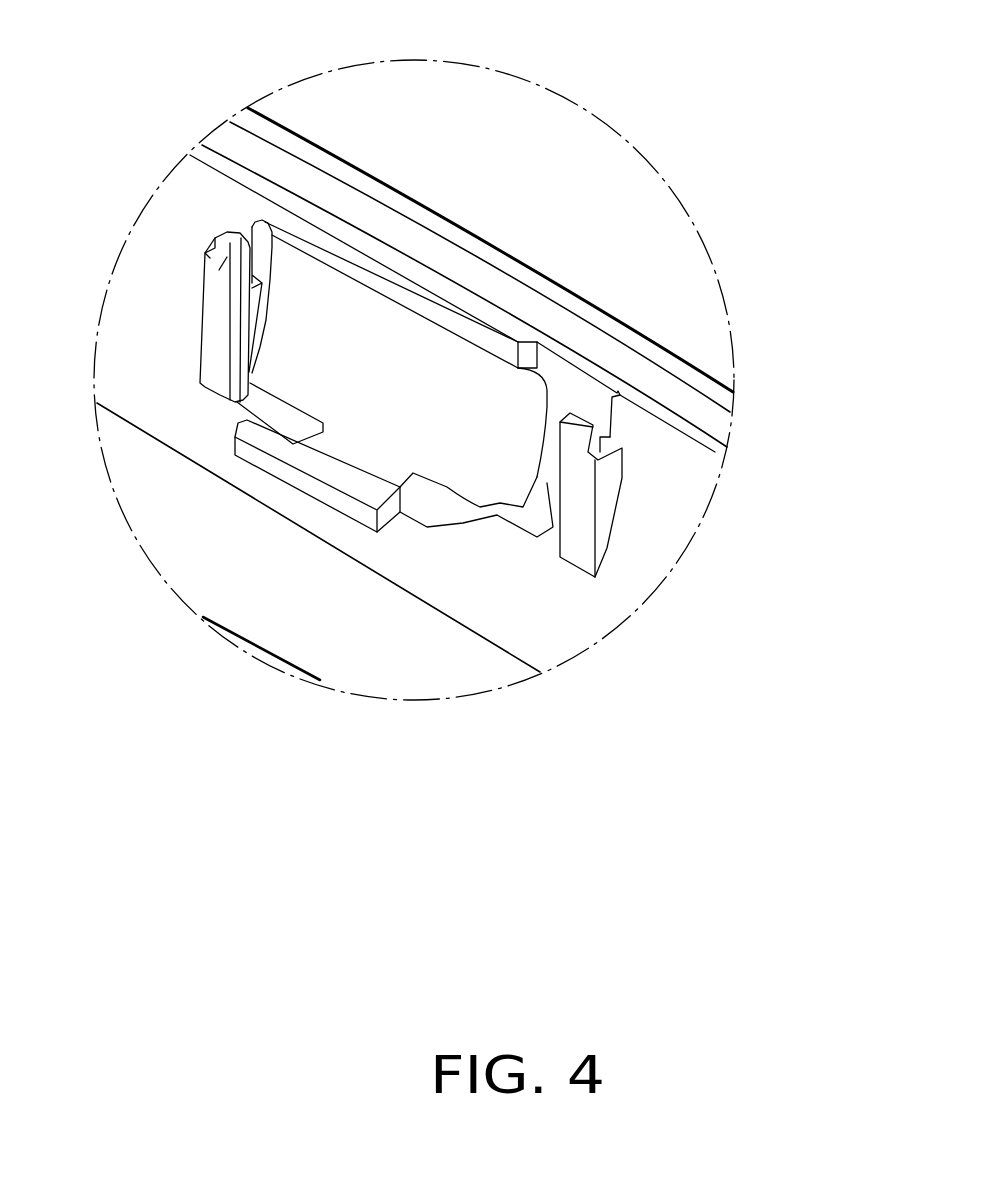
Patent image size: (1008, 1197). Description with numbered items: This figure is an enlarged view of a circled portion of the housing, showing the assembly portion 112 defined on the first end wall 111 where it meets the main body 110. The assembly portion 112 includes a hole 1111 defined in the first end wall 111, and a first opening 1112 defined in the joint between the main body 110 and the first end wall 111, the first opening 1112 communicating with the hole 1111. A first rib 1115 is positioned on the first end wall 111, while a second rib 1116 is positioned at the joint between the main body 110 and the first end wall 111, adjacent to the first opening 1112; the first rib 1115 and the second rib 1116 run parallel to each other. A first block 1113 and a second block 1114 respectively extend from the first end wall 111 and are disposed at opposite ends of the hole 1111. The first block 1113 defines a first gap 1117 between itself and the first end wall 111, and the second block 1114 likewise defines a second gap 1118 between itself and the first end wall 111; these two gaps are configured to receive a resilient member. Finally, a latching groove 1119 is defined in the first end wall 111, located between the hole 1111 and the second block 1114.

The main body 110 is at (210, 537).
The first end wall 111 is at (177, 260).
The assembly portion 112 is at (648, 10).
The hole 1111 is at (490, 340).
The first opening 1112 is at (545, 210).
The first block 1113 is at (233, 237).
The second block 1114 is at (607, 490).
The first rib 1115 is at (380, 277).
The second rib 1116 is at (460, 392).
The first gap 1117 is at (277, 235).
The second gap 1118 is at (603, 450).
The latching groove 1119 is at (555, 405).